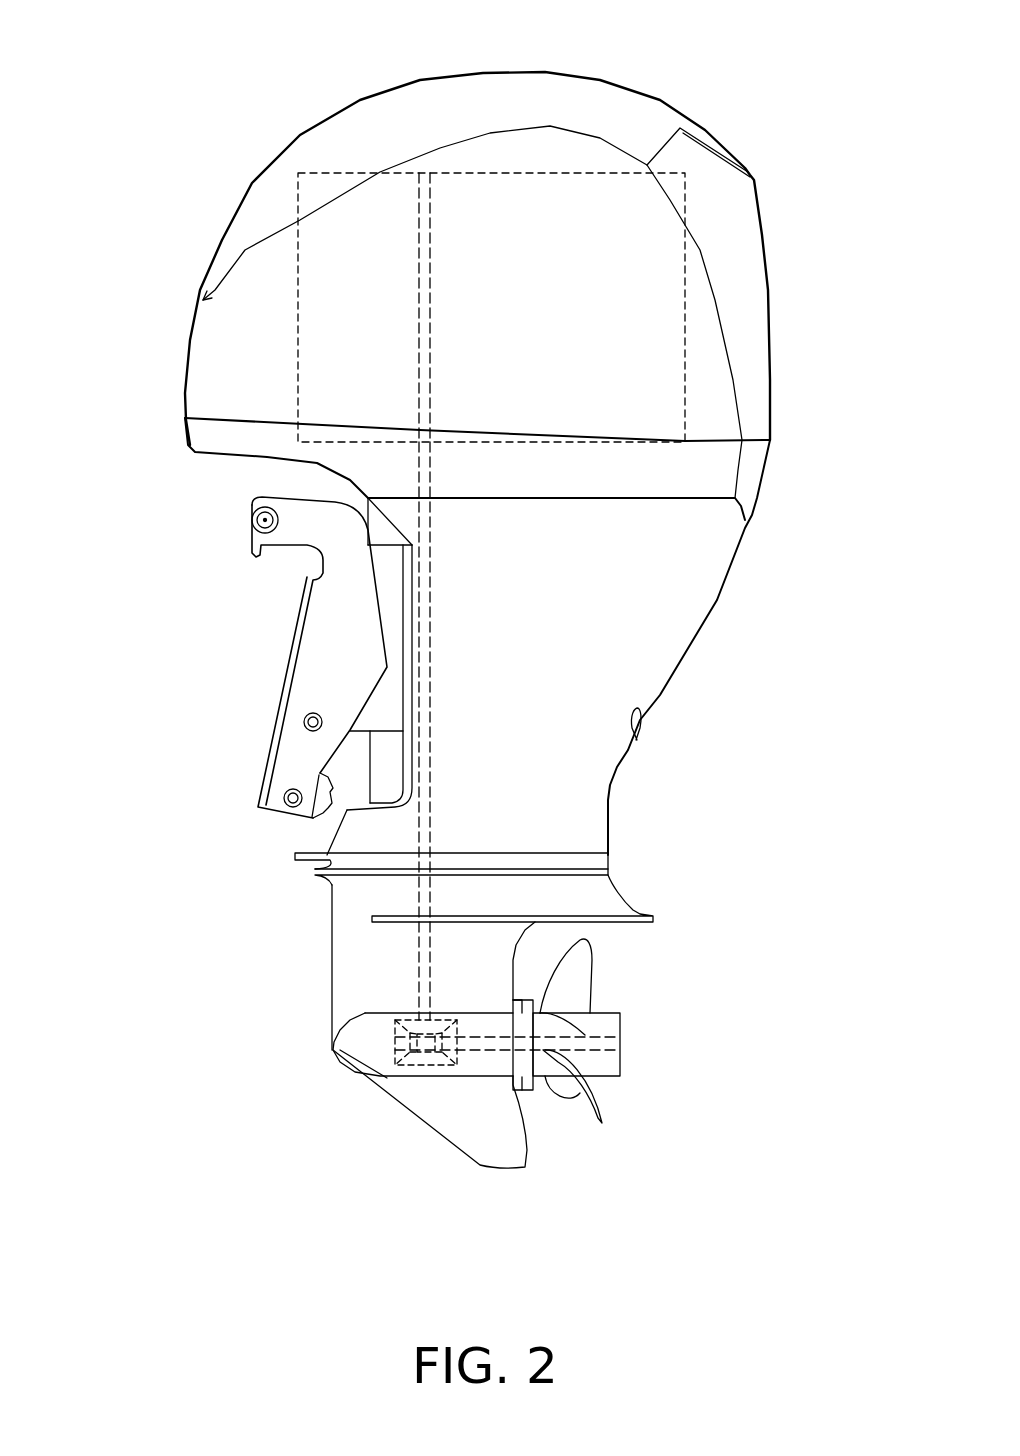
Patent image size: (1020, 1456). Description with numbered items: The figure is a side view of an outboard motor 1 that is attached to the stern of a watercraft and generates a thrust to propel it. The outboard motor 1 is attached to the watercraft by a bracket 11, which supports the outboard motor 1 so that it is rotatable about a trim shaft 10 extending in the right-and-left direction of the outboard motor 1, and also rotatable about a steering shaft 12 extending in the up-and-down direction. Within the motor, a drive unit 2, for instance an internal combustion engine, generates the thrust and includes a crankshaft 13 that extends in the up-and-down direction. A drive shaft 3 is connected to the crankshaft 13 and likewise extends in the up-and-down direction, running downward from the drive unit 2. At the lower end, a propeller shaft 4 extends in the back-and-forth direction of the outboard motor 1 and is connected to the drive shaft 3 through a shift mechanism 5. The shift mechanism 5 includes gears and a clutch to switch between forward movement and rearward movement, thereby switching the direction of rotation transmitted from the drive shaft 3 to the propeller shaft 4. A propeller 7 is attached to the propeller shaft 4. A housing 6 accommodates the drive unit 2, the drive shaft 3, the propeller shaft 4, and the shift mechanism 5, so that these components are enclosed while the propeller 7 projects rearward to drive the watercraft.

The outboard motor 1 is at (214, 100).
The drive unit 2 is at (298, 290).
The drive shaft 3 is at (432, 620).
The propeller shaft 4 is at (492, 1055).
The shift mechanism 5 is at (382, 1068).
The housing 6 is at (697, 708).
The propeller 7 is at (565, 1085).
The trim shaft 10 is at (252, 520).
The bracket 11 is at (300, 612).
The steering shaft 12 is at (382, 770).
The crankshaft 13 is at (418, 368).